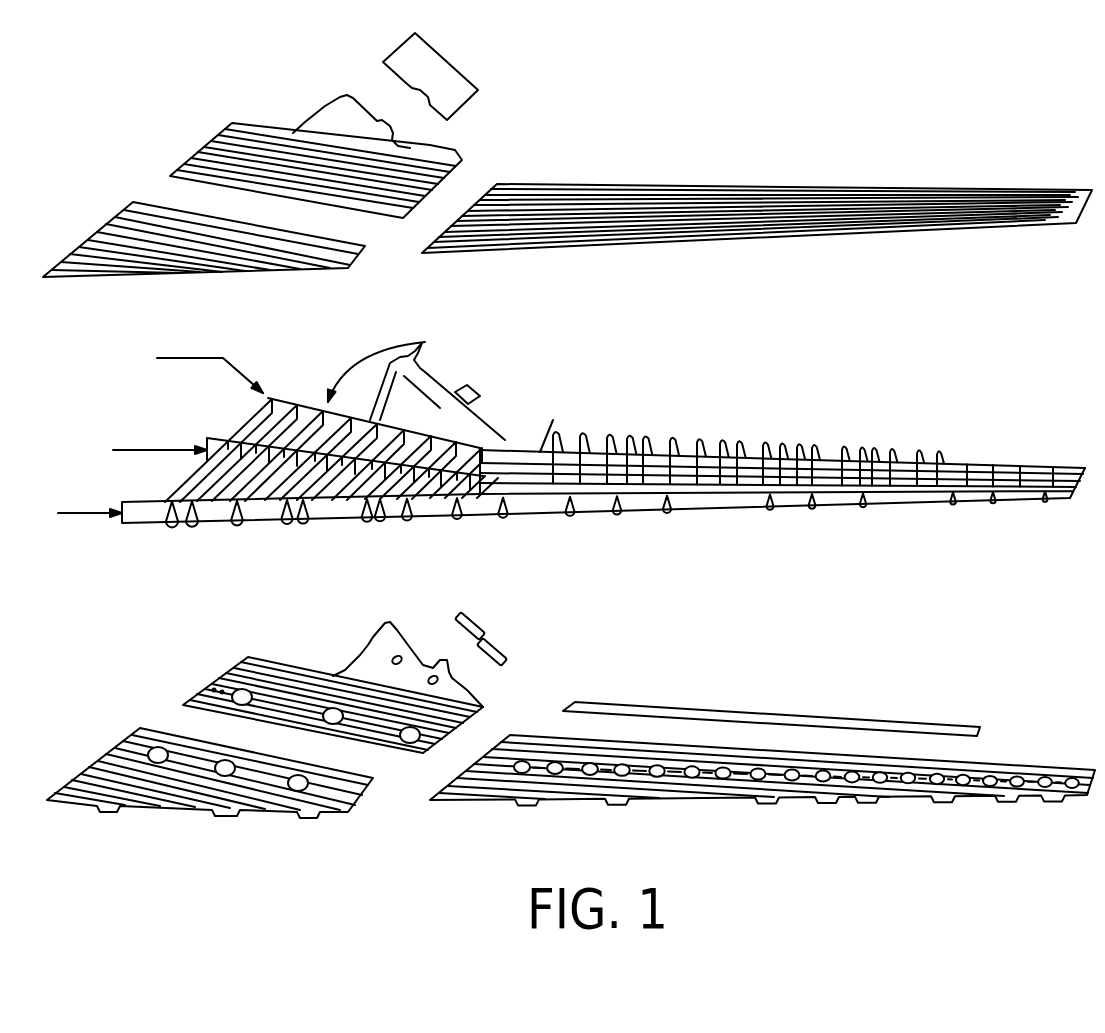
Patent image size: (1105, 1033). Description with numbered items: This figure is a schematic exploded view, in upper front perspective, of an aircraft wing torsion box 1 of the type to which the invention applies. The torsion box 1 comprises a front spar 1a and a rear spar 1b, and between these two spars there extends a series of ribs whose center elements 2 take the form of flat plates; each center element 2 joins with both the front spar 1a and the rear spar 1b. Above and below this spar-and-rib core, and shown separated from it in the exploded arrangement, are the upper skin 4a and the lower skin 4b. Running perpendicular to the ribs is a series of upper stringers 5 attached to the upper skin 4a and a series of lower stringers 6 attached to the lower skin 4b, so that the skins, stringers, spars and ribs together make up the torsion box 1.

The torsion box 1 is at (922, 506).
The front spar 1a is at (793, 497).
The rear spar 1b is at (972, 463).
The center element of the rib 2 is at (703, 443).
The upper skin 4a is at (560, 212).
The lower skin 4b is at (527, 787).
The upper stringers 5 is at (633, 482).
The lower stringers 6 is at (622, 437).